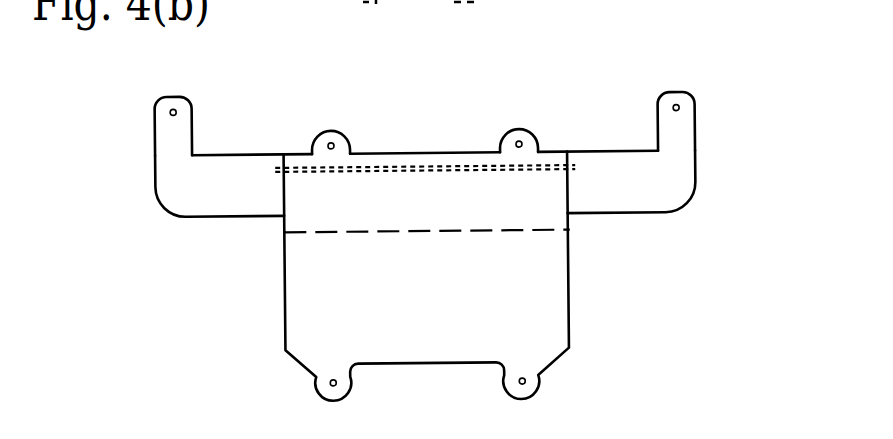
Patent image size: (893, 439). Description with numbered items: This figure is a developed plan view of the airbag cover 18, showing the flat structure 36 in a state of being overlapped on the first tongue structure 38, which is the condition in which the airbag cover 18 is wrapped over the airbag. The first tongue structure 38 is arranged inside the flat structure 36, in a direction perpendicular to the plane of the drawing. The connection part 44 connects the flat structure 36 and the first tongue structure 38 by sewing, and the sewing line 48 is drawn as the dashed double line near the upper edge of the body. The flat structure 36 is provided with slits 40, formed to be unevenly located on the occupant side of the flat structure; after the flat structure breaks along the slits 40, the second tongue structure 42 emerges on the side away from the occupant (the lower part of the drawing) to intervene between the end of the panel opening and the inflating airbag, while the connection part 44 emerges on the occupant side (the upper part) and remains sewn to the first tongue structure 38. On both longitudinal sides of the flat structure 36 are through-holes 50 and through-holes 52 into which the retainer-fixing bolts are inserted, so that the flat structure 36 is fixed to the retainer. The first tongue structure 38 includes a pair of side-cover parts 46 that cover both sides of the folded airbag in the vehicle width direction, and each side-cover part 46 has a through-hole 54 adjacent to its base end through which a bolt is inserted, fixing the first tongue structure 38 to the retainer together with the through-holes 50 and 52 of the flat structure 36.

The airbag cover 18 is at (425, 226).
The flat structure 36 is at (493, 275).
The first tongue structure 38 is at (239, 205).
The slits 40 is at (428, 236).
The second tongue structure 42 is at (557, 262).
The connection part 44 is at (556, 190).
The side-cover parts 46 is at (176, 190).
The sewing line 48 is at (427, 165).
The through-holes 50 is at (332, 142).
The through-holes 52 is at (328, 383).
The through-hole 54 is at (174, 107).